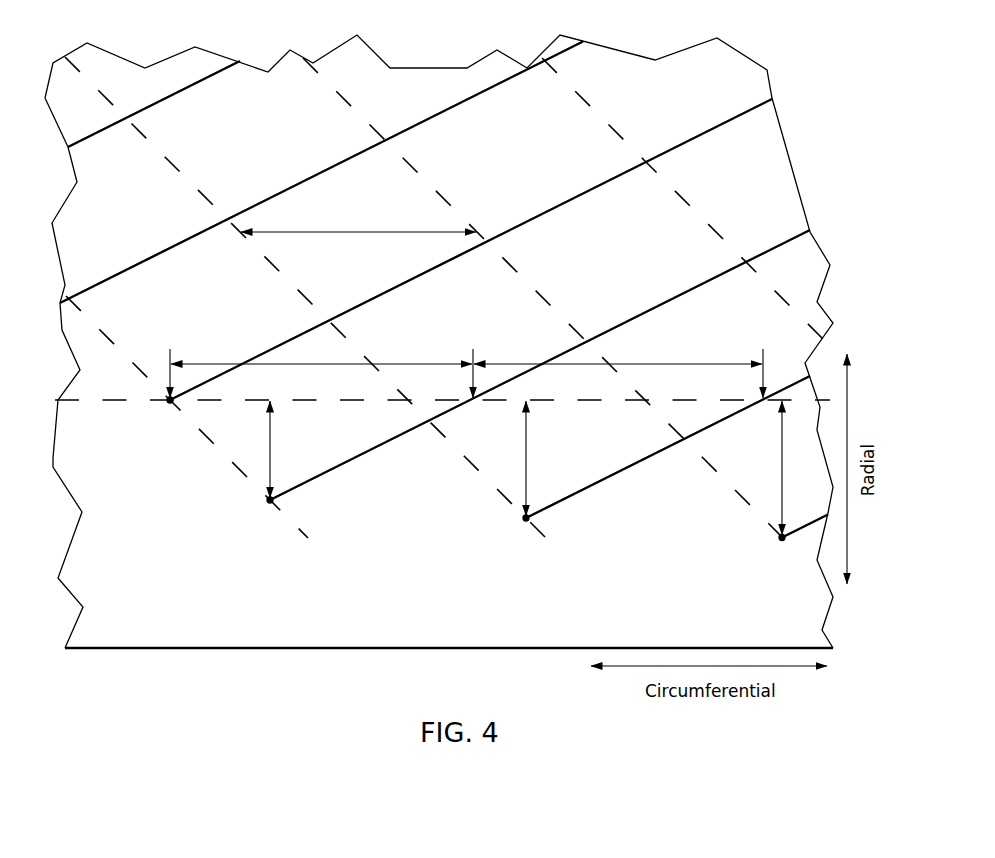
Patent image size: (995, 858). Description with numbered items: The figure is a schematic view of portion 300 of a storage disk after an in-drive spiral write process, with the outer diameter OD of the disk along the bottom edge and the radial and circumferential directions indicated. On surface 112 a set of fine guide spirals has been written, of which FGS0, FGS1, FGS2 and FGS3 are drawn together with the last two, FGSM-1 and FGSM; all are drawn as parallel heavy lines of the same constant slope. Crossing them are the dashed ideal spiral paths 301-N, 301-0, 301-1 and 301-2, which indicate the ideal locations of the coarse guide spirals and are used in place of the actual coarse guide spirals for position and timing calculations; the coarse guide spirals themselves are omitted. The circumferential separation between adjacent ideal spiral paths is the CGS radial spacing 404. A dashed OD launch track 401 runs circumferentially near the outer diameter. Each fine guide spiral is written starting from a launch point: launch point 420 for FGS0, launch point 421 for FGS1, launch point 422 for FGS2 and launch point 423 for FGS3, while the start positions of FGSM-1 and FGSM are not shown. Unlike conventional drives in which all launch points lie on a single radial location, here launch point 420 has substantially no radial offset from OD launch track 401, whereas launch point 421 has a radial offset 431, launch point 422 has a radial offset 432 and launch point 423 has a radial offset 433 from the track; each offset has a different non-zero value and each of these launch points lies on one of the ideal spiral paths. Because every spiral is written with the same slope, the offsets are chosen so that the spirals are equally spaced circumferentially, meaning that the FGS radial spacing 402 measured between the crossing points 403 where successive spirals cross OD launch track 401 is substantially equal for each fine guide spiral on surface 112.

The portion 300 is at (213, 52).
The outer diameter OD is at (157, 650).
The surface 112 is at (175, 607).
The fine guide spiral M-1 FGSM-1 is at (160, 101).
The fine guide spiral M FGSM is at (308, 178).
The fine guide spiral 0 FGS0 is at (427, 268).
The fine guide spiral 1 FGS1 is at (705, 284).
The fine guide spiral 2 FGS2 is at (580, 491).
The fine guide spiral 3 FGS3 is at (807, 526).
The ideal spiral path N 301-N is at (107, 331).
The ideal spiral path 0 301-0 is at (208, 203).
The ideal spiral path 1 301-1 is at (440, 190).
The ideal spiral path 2 301-2 is at (613, 127).
The OD launch track 401 is at (120, 402).
The FGS radial spacing 402 is at (290, 365).
The crossing points 403 is at (466, 362).
The CGS radial spacing 404 is at (323, 236).
The launch point 420 is at (168, 406).
The launch point 421 is at (270, 504).
The launch point 422 is at (526, 523).
The launch point 423 is at (782, 545).
The radial offset 431 is at (272, 460).
The radial offset 432 is at (528, 472).
The radial offset 433 is at (783, 487).